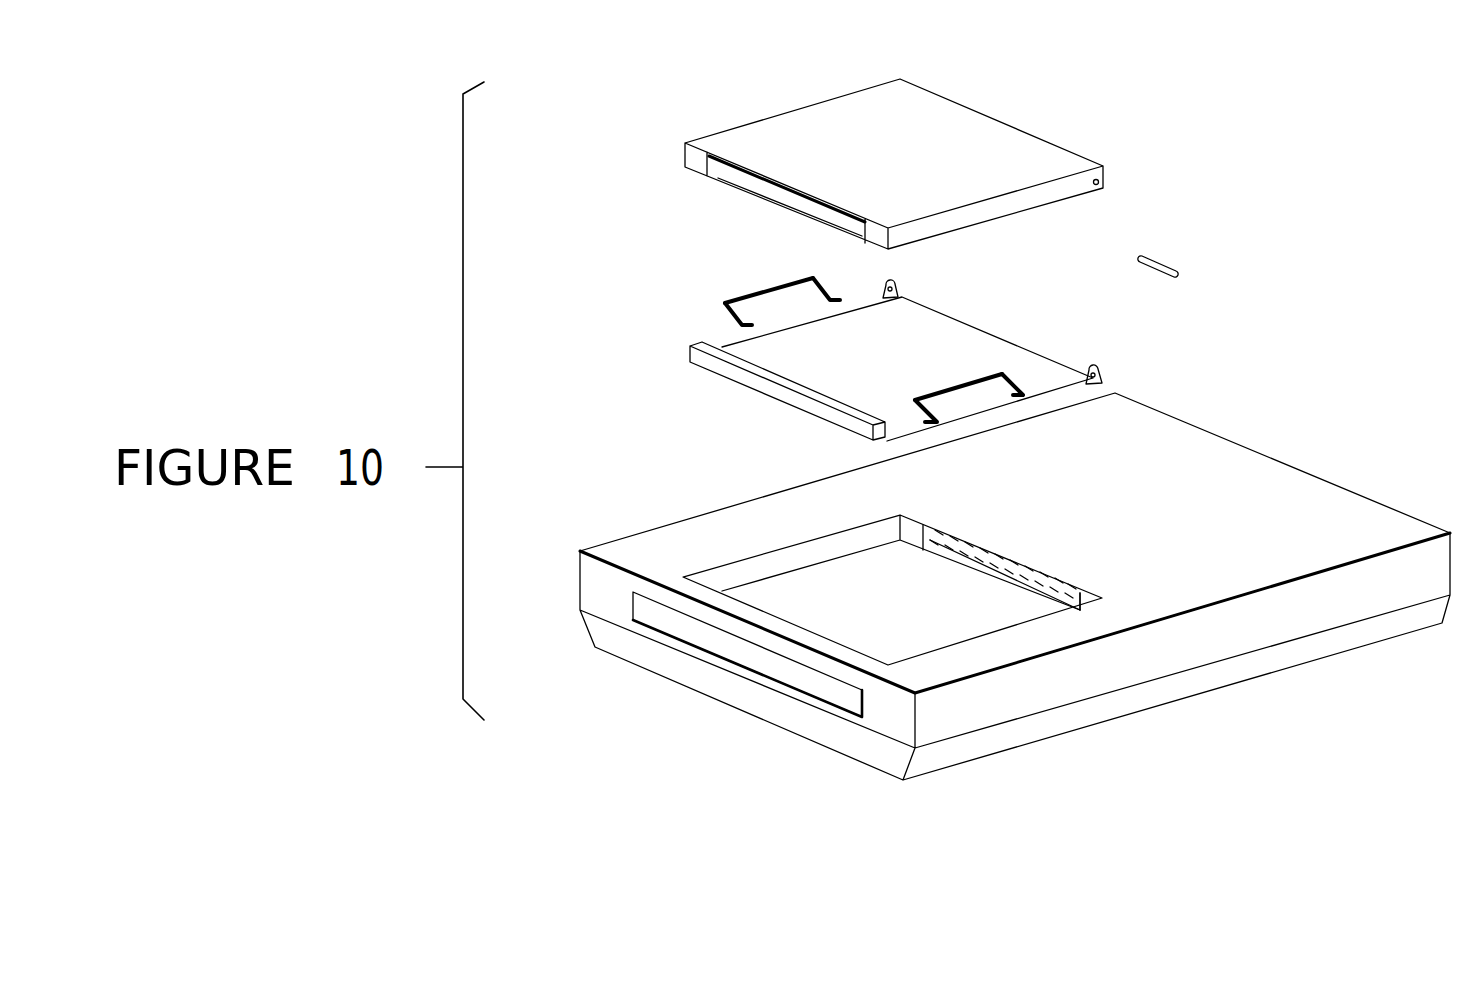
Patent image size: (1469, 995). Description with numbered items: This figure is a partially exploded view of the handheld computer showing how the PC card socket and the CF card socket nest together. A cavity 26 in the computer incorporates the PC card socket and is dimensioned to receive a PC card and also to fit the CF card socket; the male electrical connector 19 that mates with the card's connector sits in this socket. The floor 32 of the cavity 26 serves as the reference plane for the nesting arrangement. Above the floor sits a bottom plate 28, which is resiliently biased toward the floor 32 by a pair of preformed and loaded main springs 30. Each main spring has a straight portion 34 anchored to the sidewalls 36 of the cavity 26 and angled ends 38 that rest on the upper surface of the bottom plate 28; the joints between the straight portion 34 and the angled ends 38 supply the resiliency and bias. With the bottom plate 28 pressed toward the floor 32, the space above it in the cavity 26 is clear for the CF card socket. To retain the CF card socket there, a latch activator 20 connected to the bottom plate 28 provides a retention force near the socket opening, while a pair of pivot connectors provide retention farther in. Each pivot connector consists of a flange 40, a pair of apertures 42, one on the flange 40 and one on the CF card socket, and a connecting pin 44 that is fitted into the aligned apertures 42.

The male electrical connector 19 is at (1040, 580).
The latch activator 20 is at (743, 387).
The cavity 26 is at (836, 590).
The bottom plate 28 is at (959, 337).
The main springs 30 is at (747, 292).
The floor 32 is at (935, 600).
The straight portions 34 is at (855, 356).
The sidewalls 36 is at (743, 577).
The angled ends 38 is at (840, 298).
The flange 40 is at (1092, 365).
The apertures 42 is at (1100, 183).
The connecting pin 44 is at (1170, 260).